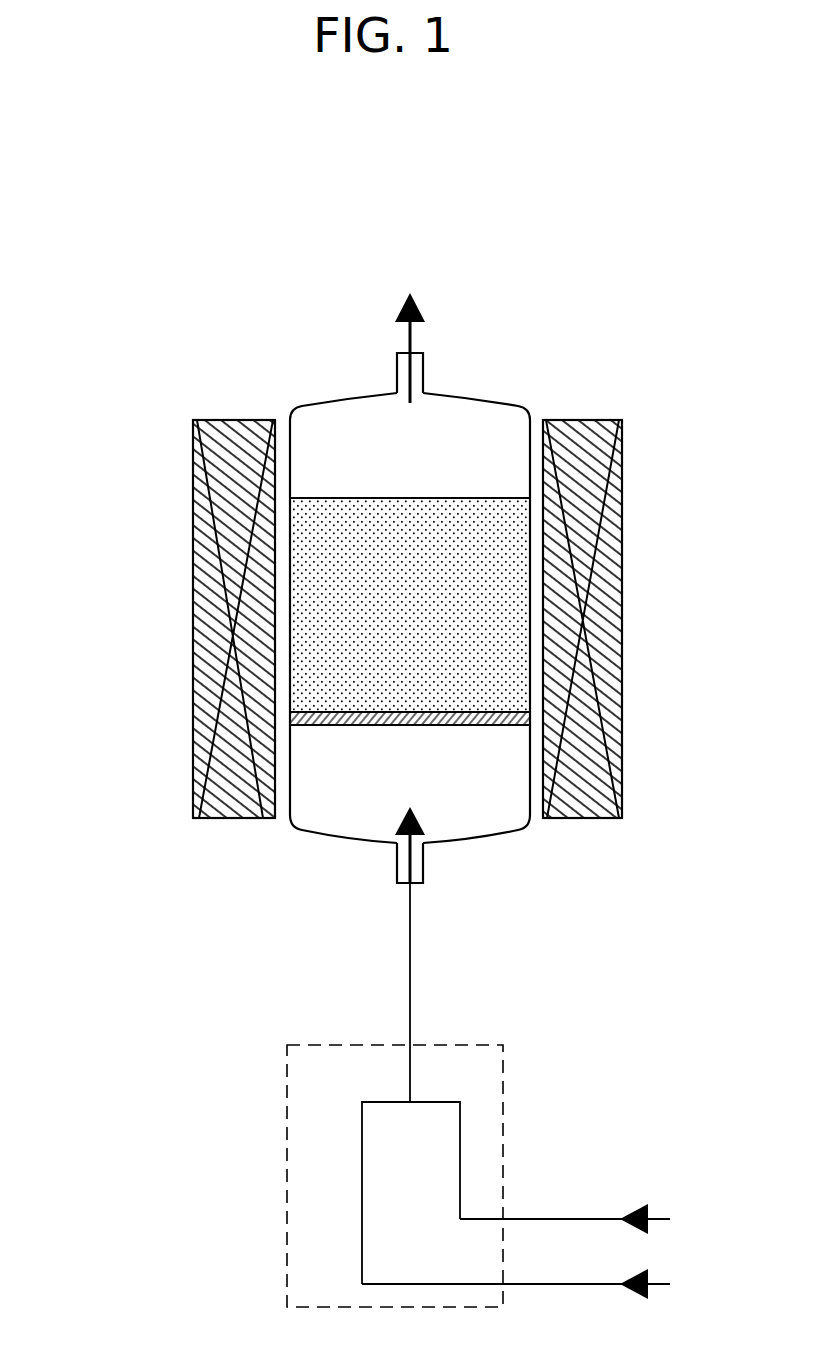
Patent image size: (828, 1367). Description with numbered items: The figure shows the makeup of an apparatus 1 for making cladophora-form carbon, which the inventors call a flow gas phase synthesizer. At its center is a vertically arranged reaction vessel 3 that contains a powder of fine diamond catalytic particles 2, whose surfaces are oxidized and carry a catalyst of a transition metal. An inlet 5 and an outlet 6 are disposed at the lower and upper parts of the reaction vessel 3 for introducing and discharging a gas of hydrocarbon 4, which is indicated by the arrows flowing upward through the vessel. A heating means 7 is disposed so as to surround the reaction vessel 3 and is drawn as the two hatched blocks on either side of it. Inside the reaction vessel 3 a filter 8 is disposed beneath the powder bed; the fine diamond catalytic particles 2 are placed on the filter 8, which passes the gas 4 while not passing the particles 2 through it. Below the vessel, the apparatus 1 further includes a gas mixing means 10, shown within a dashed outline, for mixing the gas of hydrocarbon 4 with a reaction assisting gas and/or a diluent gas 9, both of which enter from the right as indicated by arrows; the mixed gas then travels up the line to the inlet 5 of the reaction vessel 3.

The apparatus for making cladophora-form carbon 1 is at (93, 318).
The fine diamond catalytic particles 2 is at (468, 658).
The reaction vessel 3 is at (338, 398).
The gas of hydrocarbon 4 is at (410, 348).
The inlet 5 is at (400, 868).
The outlet 6 is at (425, 368).
The heating means 7 is at (205, 553).
The filter 8 is at (387, 722).
The reaction assisting gas and/or diluent gas 9 is at (572, 1284).
The gas mixing means 10 is at (287, 1135).